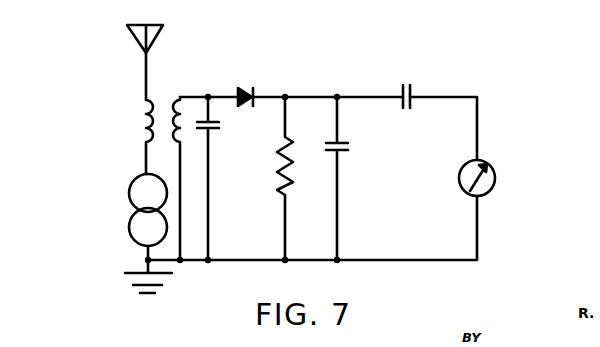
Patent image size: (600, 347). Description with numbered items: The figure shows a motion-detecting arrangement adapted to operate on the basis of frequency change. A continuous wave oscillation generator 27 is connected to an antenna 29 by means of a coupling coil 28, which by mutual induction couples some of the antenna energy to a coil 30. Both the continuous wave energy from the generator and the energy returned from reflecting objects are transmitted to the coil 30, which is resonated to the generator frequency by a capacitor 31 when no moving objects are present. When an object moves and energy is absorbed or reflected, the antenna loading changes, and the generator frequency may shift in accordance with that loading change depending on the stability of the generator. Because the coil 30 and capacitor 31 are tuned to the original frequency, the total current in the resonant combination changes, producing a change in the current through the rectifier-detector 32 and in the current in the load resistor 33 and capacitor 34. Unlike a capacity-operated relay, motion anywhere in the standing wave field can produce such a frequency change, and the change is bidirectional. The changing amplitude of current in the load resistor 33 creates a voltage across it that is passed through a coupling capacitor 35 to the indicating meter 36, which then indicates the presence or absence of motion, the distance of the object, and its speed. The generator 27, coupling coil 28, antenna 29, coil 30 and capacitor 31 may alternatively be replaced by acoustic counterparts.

The continuous wave oscillation generator 27 is at (130, 190).
The coupling coil 28 is at (146, 133).
The antenna 29 is at (138, 34).
The coil 30 is at (175, 104).
The capacitor 31 is at (209, 131).
The rectifier-detector 32 is at (259, 83).
The load resistor 33 is at (291, 165).
The capacitor 34 is at (339, 153).
The coupling capacitor 35 is at (411, 93).
The indicating meter 36 is at (495, 178).